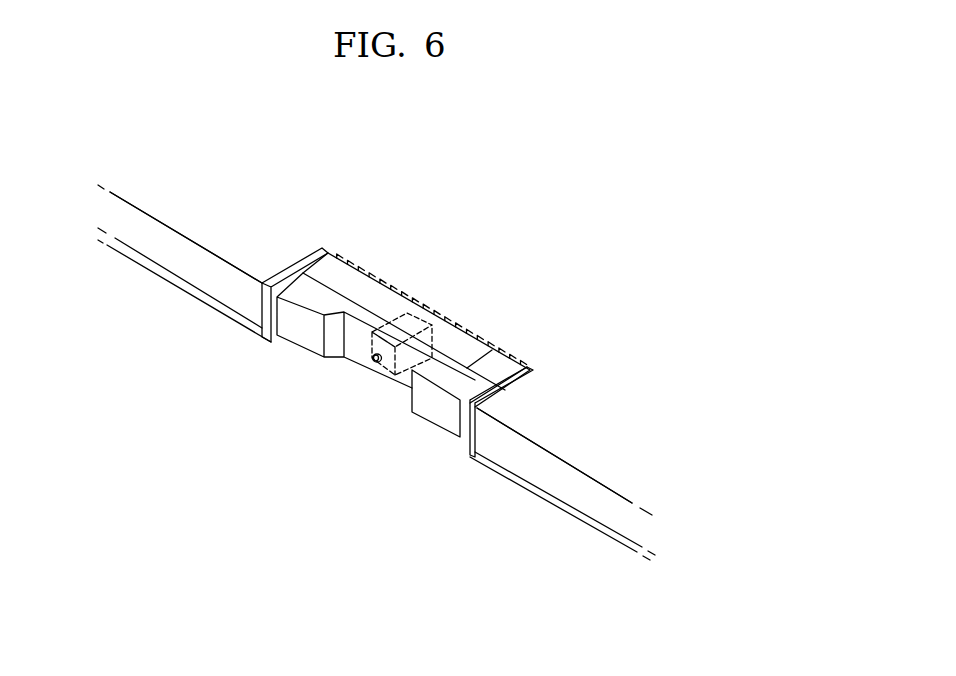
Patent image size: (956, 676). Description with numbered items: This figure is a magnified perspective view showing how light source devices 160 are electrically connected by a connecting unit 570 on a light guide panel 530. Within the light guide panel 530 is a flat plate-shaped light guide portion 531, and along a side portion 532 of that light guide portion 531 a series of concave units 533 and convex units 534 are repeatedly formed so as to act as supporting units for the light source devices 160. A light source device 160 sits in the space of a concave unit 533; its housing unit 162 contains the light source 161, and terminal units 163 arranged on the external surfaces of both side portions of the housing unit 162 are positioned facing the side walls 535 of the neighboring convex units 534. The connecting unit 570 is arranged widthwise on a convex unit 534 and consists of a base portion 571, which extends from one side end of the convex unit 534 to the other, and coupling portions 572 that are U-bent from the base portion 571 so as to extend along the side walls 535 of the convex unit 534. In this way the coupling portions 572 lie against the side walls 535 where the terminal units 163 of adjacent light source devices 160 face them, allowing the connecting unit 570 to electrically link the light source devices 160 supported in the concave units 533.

The light source device 160 is at (376, 415).
The light source 161 is at (387, 367).
The housing unit 162 is at (393, 392).
The terminal unit 163 is at (465, 380).
The light guide panel 530 is at (562, 503).
The light guide portion 531 is at (608, 457).
The side portion 532 is at (543, 467).
The concave unit 533 is at (425, 298).
The convex unit 534 is at (222, 247).
The side wall 535 is at (473, 438).
The connecting unit 570 is at (213, 310).
The base portion 571 is at (193, 295).
The coupling portion 572 is at (280, 347).